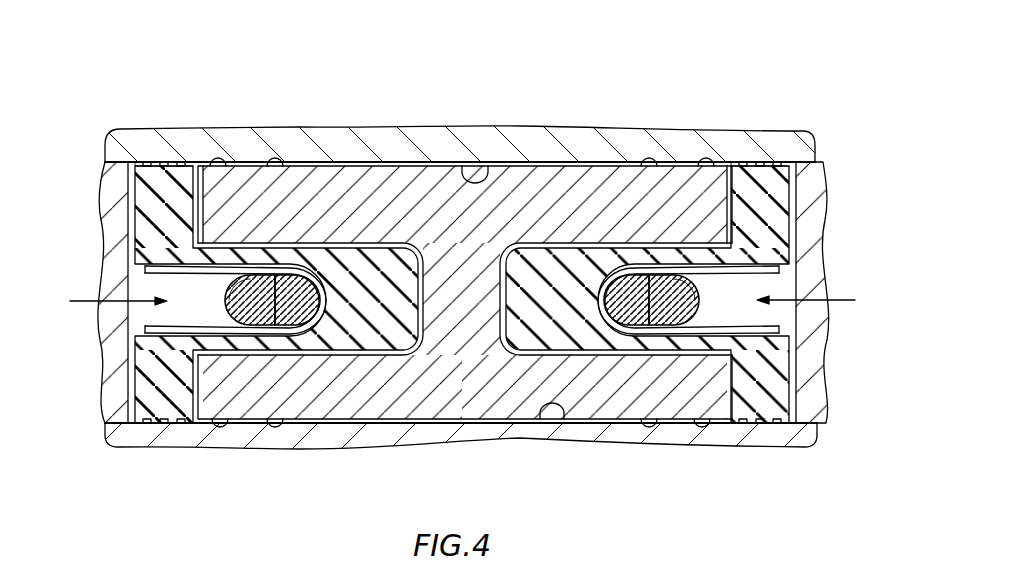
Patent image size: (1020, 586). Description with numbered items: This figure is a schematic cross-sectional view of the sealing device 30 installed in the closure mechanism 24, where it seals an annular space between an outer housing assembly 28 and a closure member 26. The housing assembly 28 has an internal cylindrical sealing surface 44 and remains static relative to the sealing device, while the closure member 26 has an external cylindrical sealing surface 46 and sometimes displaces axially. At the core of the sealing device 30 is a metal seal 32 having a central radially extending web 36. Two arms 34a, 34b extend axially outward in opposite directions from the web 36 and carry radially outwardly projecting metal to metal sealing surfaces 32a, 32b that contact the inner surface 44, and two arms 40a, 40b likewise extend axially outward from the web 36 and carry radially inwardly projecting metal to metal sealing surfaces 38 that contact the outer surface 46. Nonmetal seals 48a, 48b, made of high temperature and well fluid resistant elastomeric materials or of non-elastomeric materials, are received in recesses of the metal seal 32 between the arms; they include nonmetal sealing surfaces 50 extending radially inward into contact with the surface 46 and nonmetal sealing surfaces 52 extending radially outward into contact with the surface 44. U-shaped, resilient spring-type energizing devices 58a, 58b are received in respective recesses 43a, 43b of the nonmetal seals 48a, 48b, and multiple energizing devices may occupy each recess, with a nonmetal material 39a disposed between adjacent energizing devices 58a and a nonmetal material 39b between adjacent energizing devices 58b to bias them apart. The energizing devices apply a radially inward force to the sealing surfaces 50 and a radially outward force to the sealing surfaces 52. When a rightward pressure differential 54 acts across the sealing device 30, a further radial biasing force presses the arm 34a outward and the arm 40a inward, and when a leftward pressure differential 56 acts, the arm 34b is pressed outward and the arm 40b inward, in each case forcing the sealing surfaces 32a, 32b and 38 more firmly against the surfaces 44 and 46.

The closure mechanism 24 is at (142, 448).
The closure member 26 is at (817, 438).
The outer housing assembly 28 is at (813, 150).
The sealing device 30 is at (835, 237).
The metal seal 32 is at (430, 162).
The metal to metal sealing surface 32a is at (217, 160).
The metal to metal sealing surface 32b is at (275, 158).
The arm 34a is at (343, 180).
The arm 34b is at (530, 187).
The central radially extending web 36 is at (455, 323).
The metal to metal sealing surfaces 38 is at (220, 428).
The nonmetal material 39a is at (232, 282).
The nonmetal material 39b is at (700, 275).
The arm 40a is at (345, 398).
The arm 40b is at (612, 410).
The recess 43a is at (313, 332).
The recess 43b is at (622, 283).
The internal cylindrical sealing surface 44 is at (487, 173).
The external cylindrical sealing surface 46 is at (556, 428).
The nonmetal seal 48a is at (158, 383).
The nonmetal seal 48b is at (767, 358).
The nonmetal sealing surfaces 50 is at (170, 428).
The nonmetal sealing surfaces 52 is at (157, 162).
The pressure differential 54 is at (88, 300).
The pressure differential 56 is at (855, 300).
The energizing device 58a is at (170, 312).
The energizing device 58b is at (727, 310).